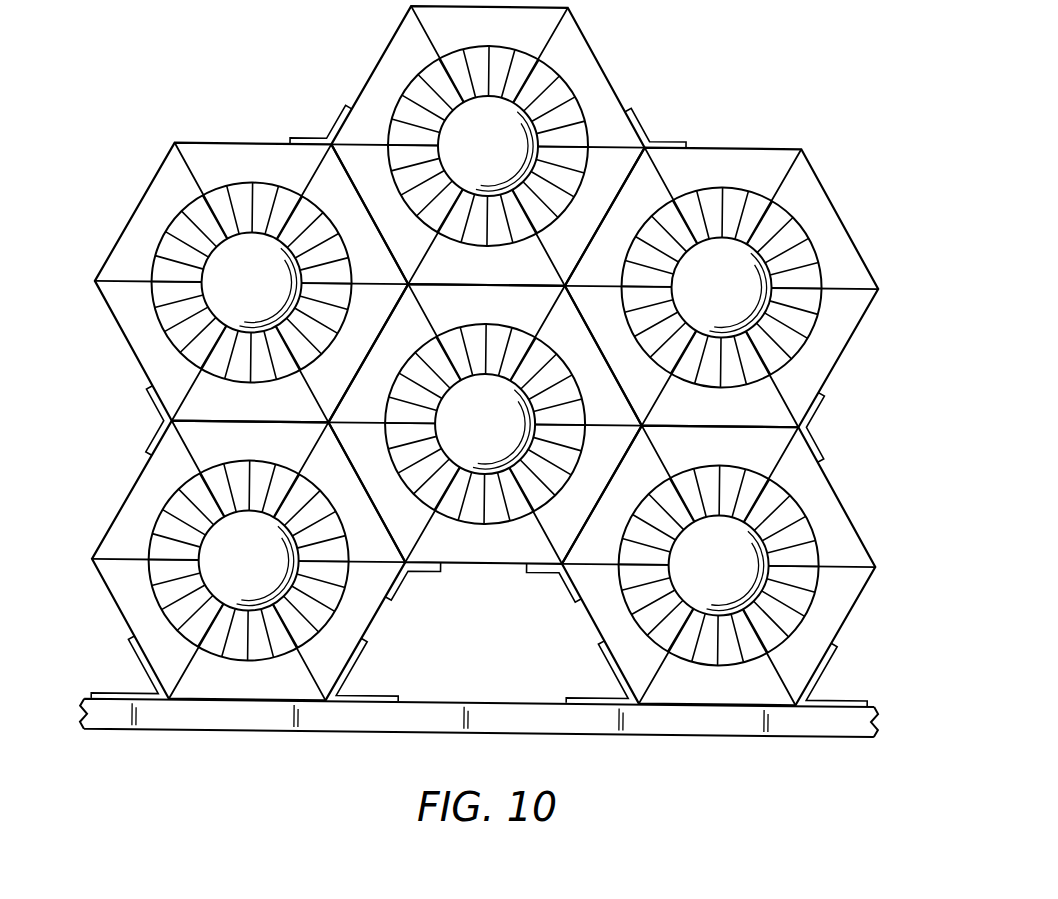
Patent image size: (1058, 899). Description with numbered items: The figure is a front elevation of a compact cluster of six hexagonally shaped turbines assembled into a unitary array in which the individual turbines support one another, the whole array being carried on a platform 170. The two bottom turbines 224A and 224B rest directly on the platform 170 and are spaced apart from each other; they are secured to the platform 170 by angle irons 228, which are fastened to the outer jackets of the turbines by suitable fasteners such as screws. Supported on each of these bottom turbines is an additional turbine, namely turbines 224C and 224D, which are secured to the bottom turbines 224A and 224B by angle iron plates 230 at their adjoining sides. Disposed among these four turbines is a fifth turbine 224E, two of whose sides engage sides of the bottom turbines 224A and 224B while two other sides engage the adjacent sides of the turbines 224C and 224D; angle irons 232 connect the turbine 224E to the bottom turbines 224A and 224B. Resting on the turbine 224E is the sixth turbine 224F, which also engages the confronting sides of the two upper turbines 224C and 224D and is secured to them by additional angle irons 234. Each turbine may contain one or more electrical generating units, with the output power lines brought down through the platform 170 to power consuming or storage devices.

The platform 170 is at (745, 730).
The bottom turbine 224A is at (129, 511).
The bottom turbine 224B is at (850, 518).
The additional turbine 224C is at (156, 175).
The additional turbine 224D is at (816, 178).
The fifth turbine 224E is at (512, 311).
The sixth turbine 224F is at (606, 53).
The angle irons 228 is at (130, 651).
The angle iron plates 230 is at (152, 403).
The angle irons 232 is at (422, 575).
The additional angle irons 234 is at (337, 128).